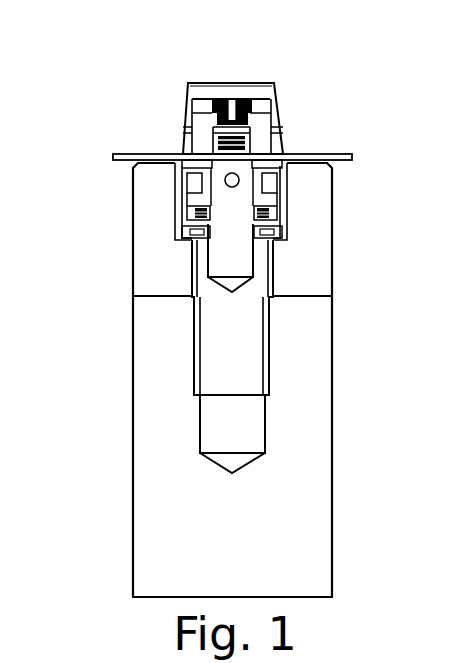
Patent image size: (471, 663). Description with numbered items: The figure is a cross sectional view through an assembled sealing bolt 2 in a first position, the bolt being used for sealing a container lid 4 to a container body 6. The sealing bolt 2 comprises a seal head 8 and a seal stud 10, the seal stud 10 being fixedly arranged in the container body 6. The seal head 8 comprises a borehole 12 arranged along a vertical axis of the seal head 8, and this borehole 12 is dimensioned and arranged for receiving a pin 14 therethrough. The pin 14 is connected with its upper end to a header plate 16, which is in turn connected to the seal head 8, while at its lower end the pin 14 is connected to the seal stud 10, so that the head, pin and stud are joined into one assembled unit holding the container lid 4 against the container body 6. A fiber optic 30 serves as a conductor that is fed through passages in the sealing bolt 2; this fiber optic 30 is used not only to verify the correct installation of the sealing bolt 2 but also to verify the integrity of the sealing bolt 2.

The sealing bolt 2 is at (166, 70).
The container lid 4 is at (318, 257).
The container body 6 is at (318, 368).
The seal head 8 is at (275, 145).
The seal stud 10 is at (215, 352).
The borehole 12 is at (253, 121).
The pin 14 is at (228, 205).
The header plate 16 is at (236, 96).
The fiber optic 30 is at (142, 155).